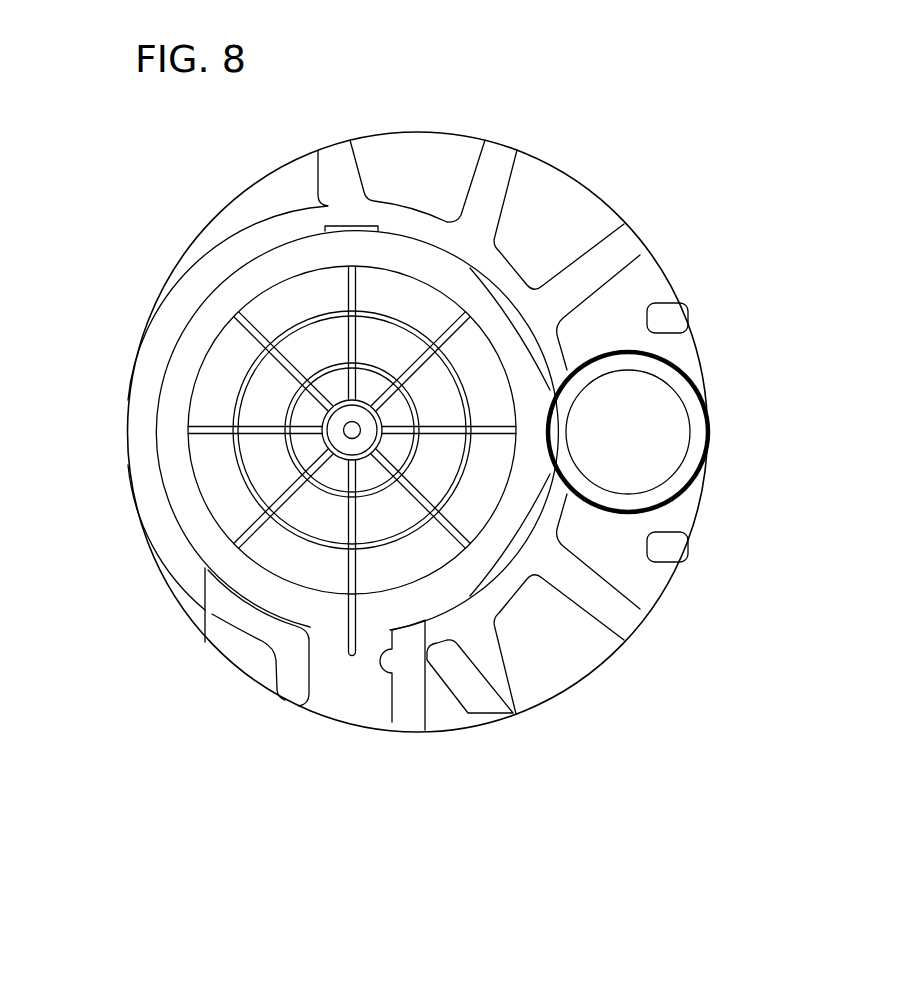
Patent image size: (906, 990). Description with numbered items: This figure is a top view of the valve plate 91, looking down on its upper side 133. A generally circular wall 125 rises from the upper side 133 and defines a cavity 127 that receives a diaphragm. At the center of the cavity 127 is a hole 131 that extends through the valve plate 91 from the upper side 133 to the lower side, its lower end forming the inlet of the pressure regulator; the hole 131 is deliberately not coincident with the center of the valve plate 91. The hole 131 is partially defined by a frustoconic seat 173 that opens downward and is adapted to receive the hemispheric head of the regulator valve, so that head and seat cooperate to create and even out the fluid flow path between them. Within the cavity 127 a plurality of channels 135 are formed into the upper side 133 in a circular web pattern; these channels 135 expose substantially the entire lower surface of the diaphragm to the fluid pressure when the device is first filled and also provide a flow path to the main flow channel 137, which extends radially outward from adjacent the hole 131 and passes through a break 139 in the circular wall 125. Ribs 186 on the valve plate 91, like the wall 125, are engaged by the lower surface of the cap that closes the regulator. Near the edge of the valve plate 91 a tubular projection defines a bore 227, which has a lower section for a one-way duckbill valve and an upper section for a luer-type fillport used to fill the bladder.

The valve plate 91 is at (355, 730).
The circular wall 125 is at (206, 641).
The cavity 127 is at (203, 524).
The hole 131 is at (343, 434).
The upper side 133 is at (655, 583).
The channels 135 is at (275, 370).
The main flow channel 137 is at (342, 645).
The break 139 is at (383, 660).
The frustoconic seat 173 is at (343, 410).
The ribs 186 is at (507, 193).
The bore 227 is at (697, 405).